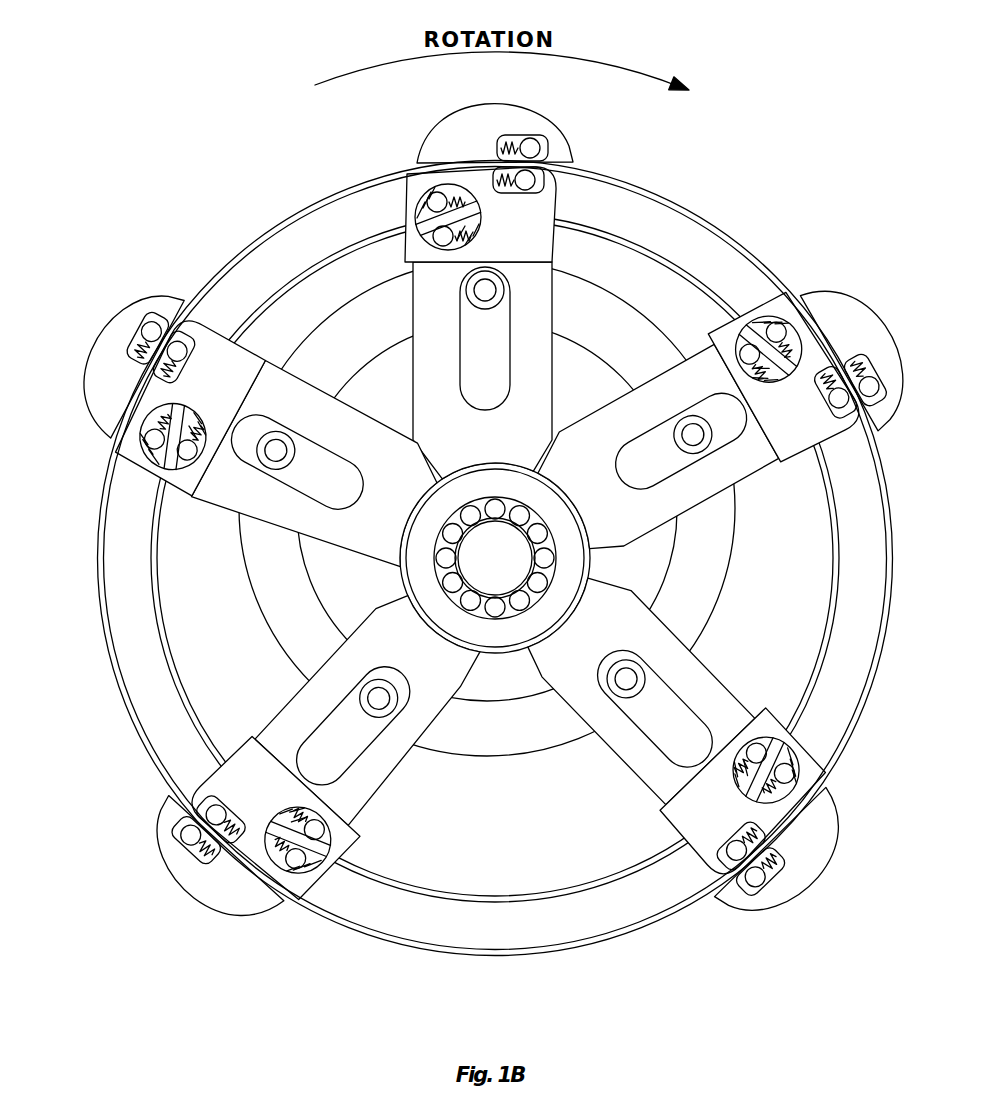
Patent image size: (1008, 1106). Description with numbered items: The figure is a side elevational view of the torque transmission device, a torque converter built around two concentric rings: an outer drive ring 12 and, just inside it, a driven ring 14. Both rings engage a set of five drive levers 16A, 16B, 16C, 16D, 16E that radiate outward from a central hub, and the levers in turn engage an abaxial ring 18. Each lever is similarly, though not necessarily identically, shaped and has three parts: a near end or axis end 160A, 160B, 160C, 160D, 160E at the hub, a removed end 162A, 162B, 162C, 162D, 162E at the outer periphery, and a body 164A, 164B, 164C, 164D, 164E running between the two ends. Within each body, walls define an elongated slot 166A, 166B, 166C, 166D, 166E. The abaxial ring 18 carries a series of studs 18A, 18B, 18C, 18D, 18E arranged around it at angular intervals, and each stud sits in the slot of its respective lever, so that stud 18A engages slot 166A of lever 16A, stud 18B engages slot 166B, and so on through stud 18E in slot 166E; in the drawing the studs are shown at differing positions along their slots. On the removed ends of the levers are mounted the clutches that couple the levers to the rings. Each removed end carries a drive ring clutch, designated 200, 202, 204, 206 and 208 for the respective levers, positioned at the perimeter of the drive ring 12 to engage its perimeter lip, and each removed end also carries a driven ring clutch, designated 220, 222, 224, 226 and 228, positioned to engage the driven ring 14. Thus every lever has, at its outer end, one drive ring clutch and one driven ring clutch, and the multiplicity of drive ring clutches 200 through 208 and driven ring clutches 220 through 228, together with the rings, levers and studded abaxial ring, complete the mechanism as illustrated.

The drive ring 12 is at (262, 239).
The driven ring 14 is at (299, 274).
The abaxial ring 18 is at (687, 559).
The drive lever 16A is at (529, 135).
The drive lever 16B is at (874, 366).
The drive lever 16C is at (776, 880).
The drive lever 16D is at (192, 868).
The drive lever 16E is at (122, 337).
The stud 18A is at (502, 291).
The stud 18B is at (702, 442).
The stud 18C is at (620, 677).
The stud 18D is at (390, 701).
The stud 18E is at (279, 437).
The near end 160A is at (487, 278).
The near end 160B is at (731, 398).
The near end 160C is at (709, 754).
The near end 160D is at (303, 776).
The near end 160E is at (239, 439).
The removed end 162A is at (444, 214).
The removed end 162B is at (769, 345).
The removed end 162C is at (769, 770).
The removed end 162D is at (303, 824).
The removed end 162E is at (174, 428).
The body 164A is at (433, 335).
The body 164B is at (652, 400).
The body 164C is at (622, 748).
The body 164D is at (308, 707).
The body 164E is at (250, 492).
The slot 166A is at (476, 374).
The slot 166B is at (634, 470).
The slot 166C is at (671, 712).
The slot 166D is at (347, 742).
The slot 166E is at (325, 484).
The drive ring clutch 200 is at (537, 178).
The drive ring clutch 202 is at (847, 404).
The drive ring clutch 204 is at (762, 884).
The drive ring clutch 206 is at (186, 837).
The drive ring clutch 208 is at (172, 346).
The driven ring clutch 220 is at (414, 212).
The driven ring clutch 222 is at (753, 313).
The driven ring clutch 224 is at (803, 757).
The driven ring clutch 226 is at (338, 848).
The driven ring clutch 228 is at (138, 466).